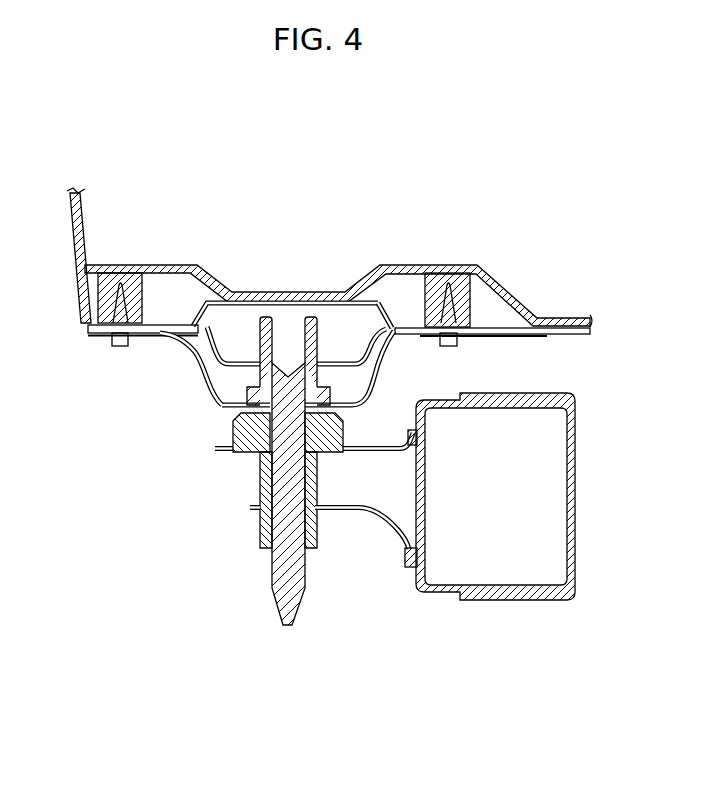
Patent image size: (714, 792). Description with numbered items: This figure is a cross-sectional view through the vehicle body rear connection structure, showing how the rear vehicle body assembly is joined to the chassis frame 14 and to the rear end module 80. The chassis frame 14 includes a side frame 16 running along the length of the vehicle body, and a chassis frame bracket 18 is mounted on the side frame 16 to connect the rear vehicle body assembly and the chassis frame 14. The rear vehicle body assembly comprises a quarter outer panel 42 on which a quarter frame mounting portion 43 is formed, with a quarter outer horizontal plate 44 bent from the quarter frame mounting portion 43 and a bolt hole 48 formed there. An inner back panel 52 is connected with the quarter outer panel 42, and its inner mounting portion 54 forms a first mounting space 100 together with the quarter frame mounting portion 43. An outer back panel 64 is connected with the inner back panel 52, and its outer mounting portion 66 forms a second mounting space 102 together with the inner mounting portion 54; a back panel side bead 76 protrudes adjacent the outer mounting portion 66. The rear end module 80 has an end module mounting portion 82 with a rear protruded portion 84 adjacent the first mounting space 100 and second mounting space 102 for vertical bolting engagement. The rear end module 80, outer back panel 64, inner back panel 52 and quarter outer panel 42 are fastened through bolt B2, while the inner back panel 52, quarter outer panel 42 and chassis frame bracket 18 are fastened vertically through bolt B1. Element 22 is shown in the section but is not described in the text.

The chassis frame 14 is at (508, 530).
The side frame 16 is at (497, 600).
The chassis frame bracket 18 is at (358, 513).
The side bracket 22 is at (329, 390).
The quarter outer panel 42 is at (170, 370).
The quarter frame mounting portion 43 is at (220, 410).
The quarter outer horizontal plate 44 is at (562, 336).
The bolt hole 48 is at (95, 337).
The inner back panel 52 is at (397, 343).
The inner mounting portion 54 is at (373, 375).
The outer back panel 64 is at (412, 286).
The outer mounting portion 66 is at (365, 342).
The back panel side bead 76 is at (448, 290).
The rear end module 80 is at (338, 233).
The end module mounting portion 82 is at (297, 281).
The rear protruded portion 84 is at (318, 269).
The first mounting space 100 is at (226, 377).
The second mounting space 102 is at (233, 320).
The bolt B1 is at (289, 628).
The bolt B2 is at (118, 346).